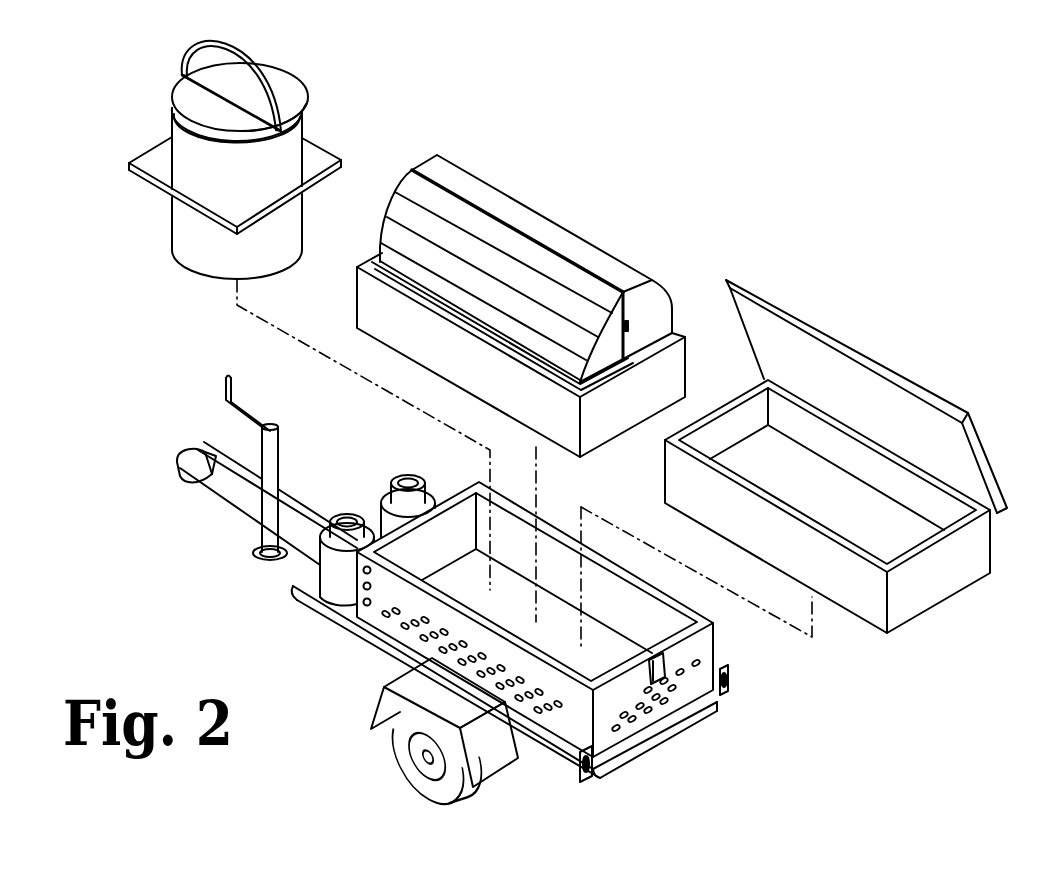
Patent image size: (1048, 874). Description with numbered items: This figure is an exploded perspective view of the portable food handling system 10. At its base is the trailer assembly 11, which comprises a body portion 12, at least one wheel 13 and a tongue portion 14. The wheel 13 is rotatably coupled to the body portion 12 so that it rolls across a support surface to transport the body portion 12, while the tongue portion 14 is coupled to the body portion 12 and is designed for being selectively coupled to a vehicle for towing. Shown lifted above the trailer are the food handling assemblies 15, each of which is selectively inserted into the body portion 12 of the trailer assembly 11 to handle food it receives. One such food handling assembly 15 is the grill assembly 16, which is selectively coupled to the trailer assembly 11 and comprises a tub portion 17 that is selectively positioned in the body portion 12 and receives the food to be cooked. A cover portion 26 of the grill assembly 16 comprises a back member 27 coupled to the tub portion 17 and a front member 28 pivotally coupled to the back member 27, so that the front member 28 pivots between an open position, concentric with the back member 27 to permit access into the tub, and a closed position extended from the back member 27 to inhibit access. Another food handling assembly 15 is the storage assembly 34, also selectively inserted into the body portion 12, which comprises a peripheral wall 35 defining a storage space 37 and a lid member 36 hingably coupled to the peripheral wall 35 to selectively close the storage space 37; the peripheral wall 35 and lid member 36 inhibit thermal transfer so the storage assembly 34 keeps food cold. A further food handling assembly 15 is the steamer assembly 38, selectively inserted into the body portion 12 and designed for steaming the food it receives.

The portable food handling system 10 is at (745, 178).
The trailer assembly 11 is at (533, 747).
The body portion 12 is at (647, 720).
The wheel 13 is at (414, 744).
The tongue portion 14 is at (240, 497).
The food handling assembly 15 is at (327, 80).
The grill assembly 16 is at (597, 183).
The tub portion 17 is at (355, 328).
The cover portion 26 is at (663, 290).
The back member 27 is at (483, 195).
The front member 28 is at (397, 232).
The storage assembly 34 is at (933, 337).
The peripheral wall 35 is at (933, 543).
The lid member 36 is at (827, 365).
The storage space 37 is at (860, 522).
The steamer assembly 38 is at (368, 103).